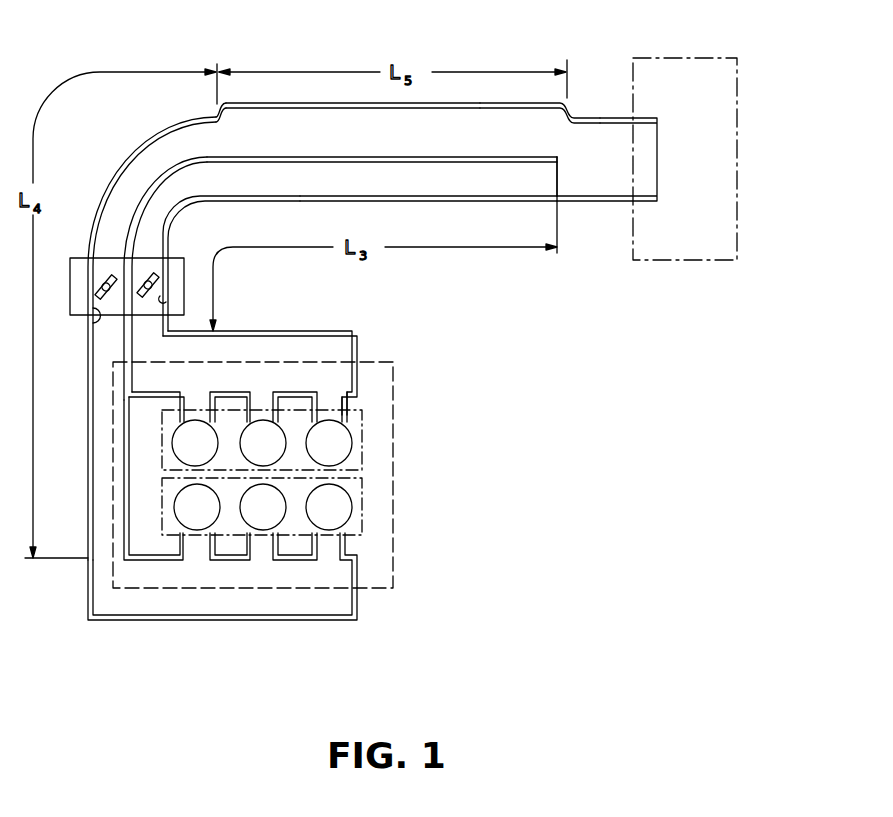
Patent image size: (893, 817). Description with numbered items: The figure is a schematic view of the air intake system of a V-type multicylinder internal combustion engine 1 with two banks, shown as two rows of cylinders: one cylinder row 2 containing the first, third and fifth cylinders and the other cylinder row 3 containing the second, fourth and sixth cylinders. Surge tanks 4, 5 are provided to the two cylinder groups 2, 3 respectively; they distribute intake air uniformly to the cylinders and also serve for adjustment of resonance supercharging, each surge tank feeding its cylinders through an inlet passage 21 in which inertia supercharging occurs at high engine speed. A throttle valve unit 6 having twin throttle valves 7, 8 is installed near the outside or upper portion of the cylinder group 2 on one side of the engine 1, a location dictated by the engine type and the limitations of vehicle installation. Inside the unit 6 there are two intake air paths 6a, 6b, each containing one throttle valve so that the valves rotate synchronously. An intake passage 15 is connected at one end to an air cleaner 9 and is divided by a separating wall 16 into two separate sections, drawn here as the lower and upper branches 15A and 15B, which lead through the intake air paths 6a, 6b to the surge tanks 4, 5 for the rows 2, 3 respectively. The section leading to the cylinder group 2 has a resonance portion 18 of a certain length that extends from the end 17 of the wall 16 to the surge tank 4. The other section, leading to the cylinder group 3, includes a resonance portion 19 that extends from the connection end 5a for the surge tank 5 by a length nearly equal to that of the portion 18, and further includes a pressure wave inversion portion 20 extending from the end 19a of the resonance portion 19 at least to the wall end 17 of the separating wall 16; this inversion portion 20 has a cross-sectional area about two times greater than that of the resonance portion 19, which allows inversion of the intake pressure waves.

The V-type multicylinder internal combustion engine 1 is at (382, 555).
The cylinder row 2 is at (357, 462).
The cylinder row 3 is at (358, 523).
The surge tank 4 is at (348, 348).
The surge tank 5 is at (343, 603).
The connection end 5a is at (130, 553).
The throttle valve unit 6 is at (70, 261).
The intake air path 6a is at (166, 302).
The intake air path 6b is at (93, 323).
The throttle valve 7 is at (155, 275).
The throttle valve 8 is at (97, 293).
The air cleaner 9 is at (682, 248).
The intake passage 15 is at (597, 213).
The lower intake passage wall 15A is at (397, 202).
The upper intake passage wall 15B is at (519, 98).
The separating wall 16 is at (462, 157).
The wall end 17 is at (560, 158).
The resonance portion 18 is at (463, 187).
The resonance portion 19 is at (140, 157).
The end of resonance portion 19a is at (215, 118).
The pressure wave inversion portion 20 is at (317, 125).
The inlet passage 21 is at (360, 403).